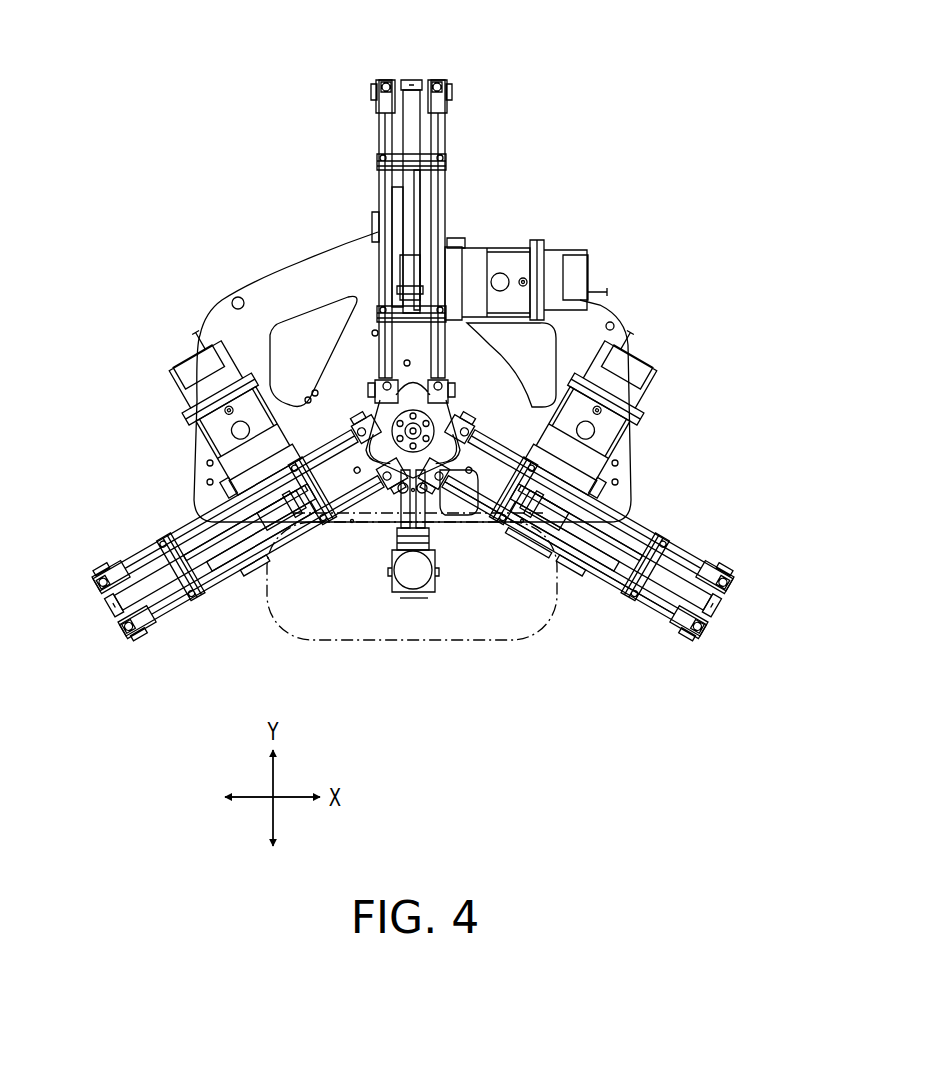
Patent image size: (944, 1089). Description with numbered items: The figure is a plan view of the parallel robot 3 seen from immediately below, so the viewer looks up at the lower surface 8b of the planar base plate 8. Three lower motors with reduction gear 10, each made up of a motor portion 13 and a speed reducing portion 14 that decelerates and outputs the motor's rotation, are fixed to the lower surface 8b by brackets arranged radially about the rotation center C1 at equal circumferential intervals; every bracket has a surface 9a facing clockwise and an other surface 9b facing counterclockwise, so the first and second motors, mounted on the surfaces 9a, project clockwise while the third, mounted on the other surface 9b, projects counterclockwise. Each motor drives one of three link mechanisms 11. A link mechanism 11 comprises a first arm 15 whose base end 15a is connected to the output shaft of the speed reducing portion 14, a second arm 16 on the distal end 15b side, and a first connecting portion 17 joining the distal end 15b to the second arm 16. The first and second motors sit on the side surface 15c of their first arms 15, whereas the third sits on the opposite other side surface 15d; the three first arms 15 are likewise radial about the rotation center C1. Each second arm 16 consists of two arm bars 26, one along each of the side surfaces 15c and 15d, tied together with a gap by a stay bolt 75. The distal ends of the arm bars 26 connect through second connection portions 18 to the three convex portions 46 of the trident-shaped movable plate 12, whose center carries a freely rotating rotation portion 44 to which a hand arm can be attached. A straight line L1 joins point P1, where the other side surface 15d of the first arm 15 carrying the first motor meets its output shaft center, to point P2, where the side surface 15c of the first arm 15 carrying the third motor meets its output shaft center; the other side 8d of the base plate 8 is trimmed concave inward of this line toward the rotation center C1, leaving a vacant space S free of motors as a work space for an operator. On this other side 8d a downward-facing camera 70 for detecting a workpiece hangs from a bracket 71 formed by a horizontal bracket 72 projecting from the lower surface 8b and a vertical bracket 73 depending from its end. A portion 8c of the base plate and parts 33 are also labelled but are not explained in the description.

The parallel robot 3 is at (575, 85).
The base plate 8 is at (255, 285).
The lower surface 8b is at (300, 272).
The cutout 8c is at (505, 300).
The other side 8d is at (455, 515).
The surface 9a is at (463, 232).
The other surface 9b is at (377, 220).
The lower motor with reduction gear 10 is at (515, 248).
The link mechanism 11 is at (458, 113).
The movable plate 12 is at (395, 425).
The motor portion 13 is at (555, 250).
The speed reducing portion 14 is at (473, 320).
The first arm 15 is at (408, 135).
The base end 15a is at (407, 290).
The distal end 15b is at (411, 80).
The side surface 15c is at (420, 213).
The other side surface 15d is at (402, 200).
The second arm 16 is at (690, 548).
The first connecting portion 17 is at (420, 70).
The second connection portion 18 is at (376, 380).
The arm bar 26 is at (643, 520).
The bolt 33 is at (383, 78).
The rotation portion 44 is at (453, 417).
The convex portion 46 is at (413, 378).
The camera 70 is at (413, 592).
The bracket 71 is at (421, 679).
The horizontal bracket 72 is at (430, 510).
The vertical bracket 73 is at (425, 552).
The stay bolt 75 is at (425, 160).
The vacant space S is at (340, 640).
The straight line L1 is at (500, 513).
The point P1 is at (352, 525).
The point P2 is at (522, 525).
The rotation center C1 is at (408, 493).